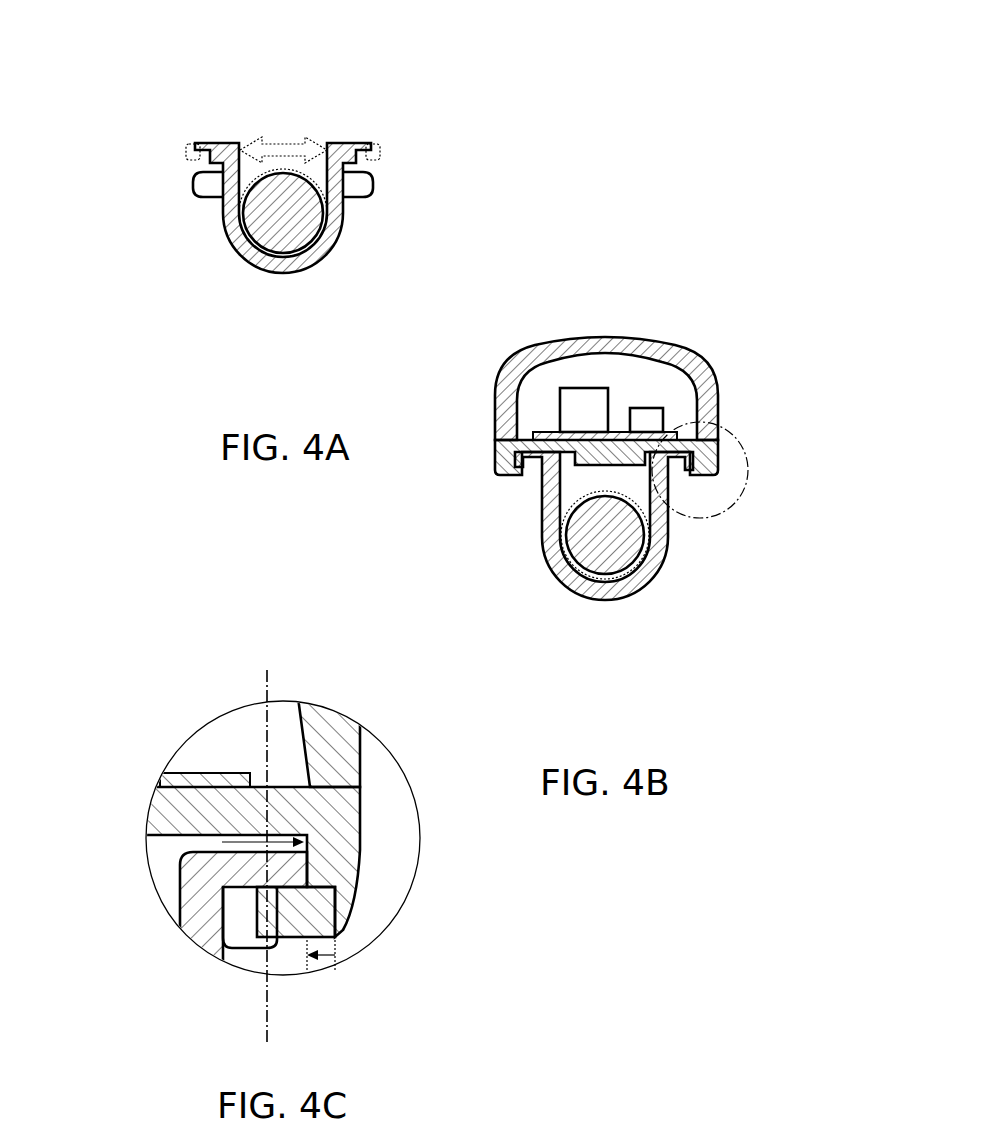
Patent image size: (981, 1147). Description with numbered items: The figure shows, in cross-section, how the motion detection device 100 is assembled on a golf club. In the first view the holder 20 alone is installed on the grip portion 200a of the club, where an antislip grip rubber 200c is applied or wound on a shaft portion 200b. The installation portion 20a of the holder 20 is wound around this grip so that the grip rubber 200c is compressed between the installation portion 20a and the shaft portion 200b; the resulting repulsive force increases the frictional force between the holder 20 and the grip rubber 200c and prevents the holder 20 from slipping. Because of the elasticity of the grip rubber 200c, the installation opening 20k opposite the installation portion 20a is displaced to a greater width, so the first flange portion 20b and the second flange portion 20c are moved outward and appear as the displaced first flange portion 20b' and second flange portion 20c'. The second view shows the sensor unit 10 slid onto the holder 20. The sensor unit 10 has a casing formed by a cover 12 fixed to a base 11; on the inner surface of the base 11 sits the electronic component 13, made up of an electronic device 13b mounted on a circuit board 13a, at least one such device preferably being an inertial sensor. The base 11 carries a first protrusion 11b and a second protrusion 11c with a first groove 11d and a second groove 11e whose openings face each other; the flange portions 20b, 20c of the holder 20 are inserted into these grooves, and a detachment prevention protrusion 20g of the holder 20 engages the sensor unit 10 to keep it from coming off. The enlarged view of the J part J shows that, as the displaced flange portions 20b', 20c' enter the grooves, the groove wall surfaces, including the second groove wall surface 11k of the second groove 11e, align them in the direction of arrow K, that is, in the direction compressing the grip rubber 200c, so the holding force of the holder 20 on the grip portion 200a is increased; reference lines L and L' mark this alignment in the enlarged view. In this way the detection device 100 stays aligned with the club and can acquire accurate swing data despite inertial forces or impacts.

In FIG. 4B, the detection device 100 is at (717, 339).
In FIG. 4B, the sensor unit 10 is at (392, 293).
In FIG. 4B, the base 11 is at (493, 447).
In FIG. 4C, the base 11 is at (150, 830).
In FIG. 4B, the first protrusion 11b is at (520, 477).
In FIG. 4B, the second protrusion 11c is at (696, 477).
In FIG. 4C, the second protrusion 11c is at (296, 940).
In FIG. 4B, the first groove 11d is at (503, 458).
In FIG. 4B, the second groove 11e is at (708, 458).
In FIG. 4C, the second groove 11e is at (232, 810).
In FIG. 4C, the second groove wall surface 11k is at (283, 835).
In FIG. 4B, the cover 12 is at (540, 346).
In FIG. 4C, the cover 12 is at (337, 770).
In FIG. 4B, the electronic component 13 is at (427, 335).
In FIG. 4B, the circuit board 13a is at (563, 436).
In FIG. 4B, the electronic device 13b is at (567, 405).
In FIG. 4A, the holder 20 is at (318, 104).
In FIG. 4B, the holder 20 is at (582, 601).
In FIG. 4C, the holder 20 is at (185, 915).
In FIG. 4A, the installation portion 20a is at (270, 280).
In FIG. 4A, the first flange portion 20b is at (204, 119).
In FIG. 4B, the first flange portion 20b is at (520, 532).
In FIG. 4A, the second flange portion 20c is at (374, 121).
In FIG. 4B, the second flange portion 20c is at (683, 532).
In FIG. 4C, the second flange portion 20c is at (215, 789).
In FIG. 4A, the first flange portion (displaced) 20b' is at (144, 124).
In FIG. 4A, the second flange portion (displaced) 20c' is at (425, 125).
In FIG. 4C, the second flange portion (displaced) 20c' is at (393, 970).
In FIG. 4C, the detachment prevention protrusion 20g is at (250, 960).
In FIG. 4A, the installation opening 20k is at (276, 146).
In FIG. 4A, the grip portion 200a is at (137, 230).
In FIG. 4B, the grip portion 200a is at (705, 686).
In FIG. 4A, the shaft portion 200b is at (222, 218).
In FIG. 4B, the shaft portion 200b is at (607, 571).
In FIG. 4A, the grip rubber 200c is at (238, 240).
In FIG. 4B, the grip rubber 200c is at (640, 576).
In FIG. 4B, the J part J is at (738, 437).
In FIG. 4C, the arrow K is at (322, 962).
In FIG. 4C, the reference line L is at (240, 854).
In FIG. 4C, the reference line L' is at (240, 1021).